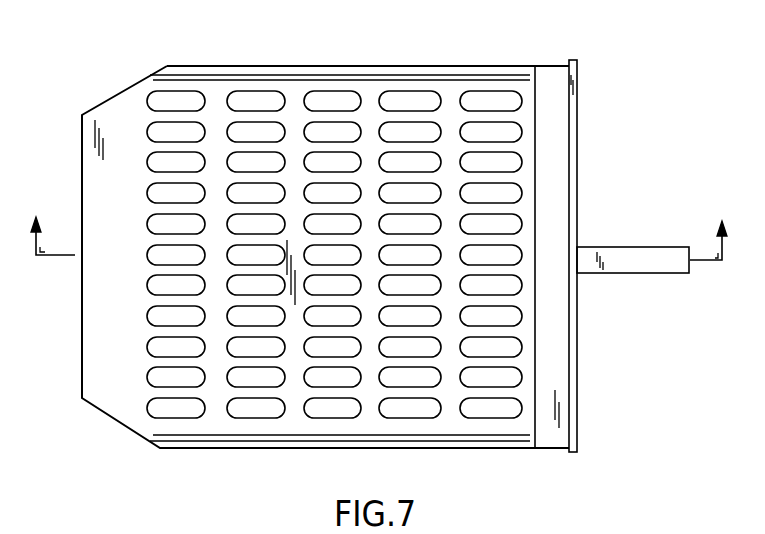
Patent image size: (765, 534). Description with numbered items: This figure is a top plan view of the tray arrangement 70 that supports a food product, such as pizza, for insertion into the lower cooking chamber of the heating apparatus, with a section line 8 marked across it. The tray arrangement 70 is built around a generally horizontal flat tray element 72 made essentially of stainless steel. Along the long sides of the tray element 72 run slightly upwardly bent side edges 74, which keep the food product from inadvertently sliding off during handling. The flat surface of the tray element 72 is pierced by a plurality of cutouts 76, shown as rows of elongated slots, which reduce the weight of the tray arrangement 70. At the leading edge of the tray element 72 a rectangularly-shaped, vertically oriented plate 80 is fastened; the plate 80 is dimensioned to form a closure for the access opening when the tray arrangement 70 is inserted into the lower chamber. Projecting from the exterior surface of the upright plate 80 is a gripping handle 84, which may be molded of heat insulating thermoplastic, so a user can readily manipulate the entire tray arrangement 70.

The tray arrangement 70 is at (404, 67).
The tray element 72 is at (210, 448).
The side edges 74 is at (233, 73).
The cutouts 76 is at (150, 385).
The plate 80 is at (578, 133).
The gripping handle 84 is at (648, 273).
The section line 8- 8 is at (379, 226).